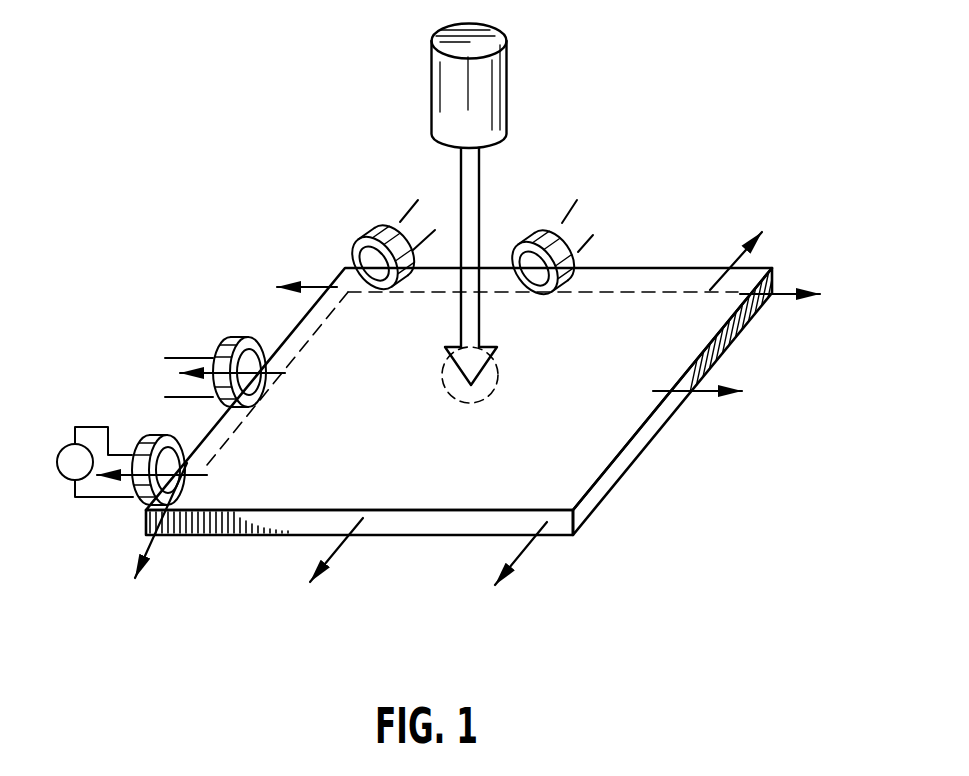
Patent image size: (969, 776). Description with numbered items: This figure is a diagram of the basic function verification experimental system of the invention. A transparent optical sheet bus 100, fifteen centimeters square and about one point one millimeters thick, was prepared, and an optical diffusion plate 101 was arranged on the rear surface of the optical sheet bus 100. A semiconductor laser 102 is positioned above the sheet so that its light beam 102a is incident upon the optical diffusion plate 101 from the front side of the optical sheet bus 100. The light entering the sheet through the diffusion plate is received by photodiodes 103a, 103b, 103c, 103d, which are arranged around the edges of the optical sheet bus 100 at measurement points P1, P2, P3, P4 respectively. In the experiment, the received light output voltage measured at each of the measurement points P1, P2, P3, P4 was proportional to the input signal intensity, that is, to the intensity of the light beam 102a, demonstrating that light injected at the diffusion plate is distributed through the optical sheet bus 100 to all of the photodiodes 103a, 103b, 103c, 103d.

The optical sheet bus 100 is at (703, 330).
The optical diffusion plate 101 is at (494, 374).
The semiconductor laser 102 is at (495, 88).
The light beam 102a is at (468, 178).
The photodiode 103a is at (114, 412).
The photodiode 103b is at (218, 321).
The photodiode 103c is at (328, 216).
The photodiode 103d is at (587, 232).
The measurement point P1 is at (147, 440).
The measurement point P2 is at (218, 364).
The measurement point P3 is at (389, 238).
The measurement point P4 is at (610, 188).